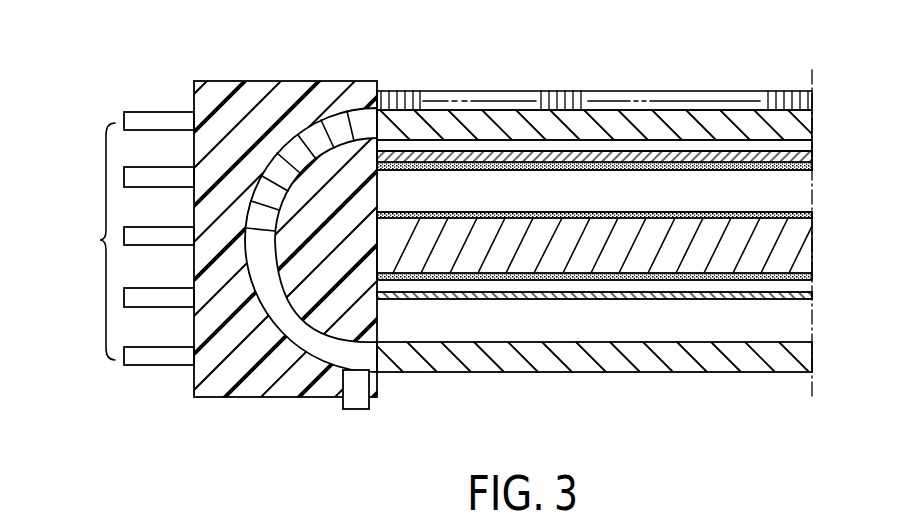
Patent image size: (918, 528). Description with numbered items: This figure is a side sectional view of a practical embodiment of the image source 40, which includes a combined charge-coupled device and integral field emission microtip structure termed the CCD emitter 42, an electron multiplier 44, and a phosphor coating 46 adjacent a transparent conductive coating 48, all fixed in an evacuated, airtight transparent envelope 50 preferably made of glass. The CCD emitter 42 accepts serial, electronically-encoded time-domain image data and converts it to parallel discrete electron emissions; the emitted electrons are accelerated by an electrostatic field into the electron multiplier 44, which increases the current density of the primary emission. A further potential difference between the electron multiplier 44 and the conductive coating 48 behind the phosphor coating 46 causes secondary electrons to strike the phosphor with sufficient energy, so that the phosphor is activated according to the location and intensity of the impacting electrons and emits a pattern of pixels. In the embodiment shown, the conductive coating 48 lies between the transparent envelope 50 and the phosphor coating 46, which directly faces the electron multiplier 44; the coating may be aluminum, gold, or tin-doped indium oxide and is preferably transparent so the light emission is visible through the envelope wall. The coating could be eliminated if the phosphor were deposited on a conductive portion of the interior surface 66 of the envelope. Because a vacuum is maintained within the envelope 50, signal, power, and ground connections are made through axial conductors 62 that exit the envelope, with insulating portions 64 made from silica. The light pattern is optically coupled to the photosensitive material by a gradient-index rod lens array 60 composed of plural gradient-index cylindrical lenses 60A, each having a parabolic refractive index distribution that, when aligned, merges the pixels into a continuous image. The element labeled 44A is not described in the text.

The image source 40 is at (321, 58).
The CCD emitter 42 is at (793, 298).
The electron multiplier 44 is at (823, 212).
The flexible circuit band 44A is at (356, 194).
The phosphor coating 46 is at (768, 172).
The conductive coating 48 is at (815, 158).
The transparent envelope 50 is at (623, 372).
The gradient-index rod lens array 60 is at (622, 80).
The gradient-index cylindrical lenses 60A is at (580, 91).
The axial conductors 62 is at (178, 112).
The insulating portions 64 is at (263, 397).
The interior surface 66 is at (815, 146).